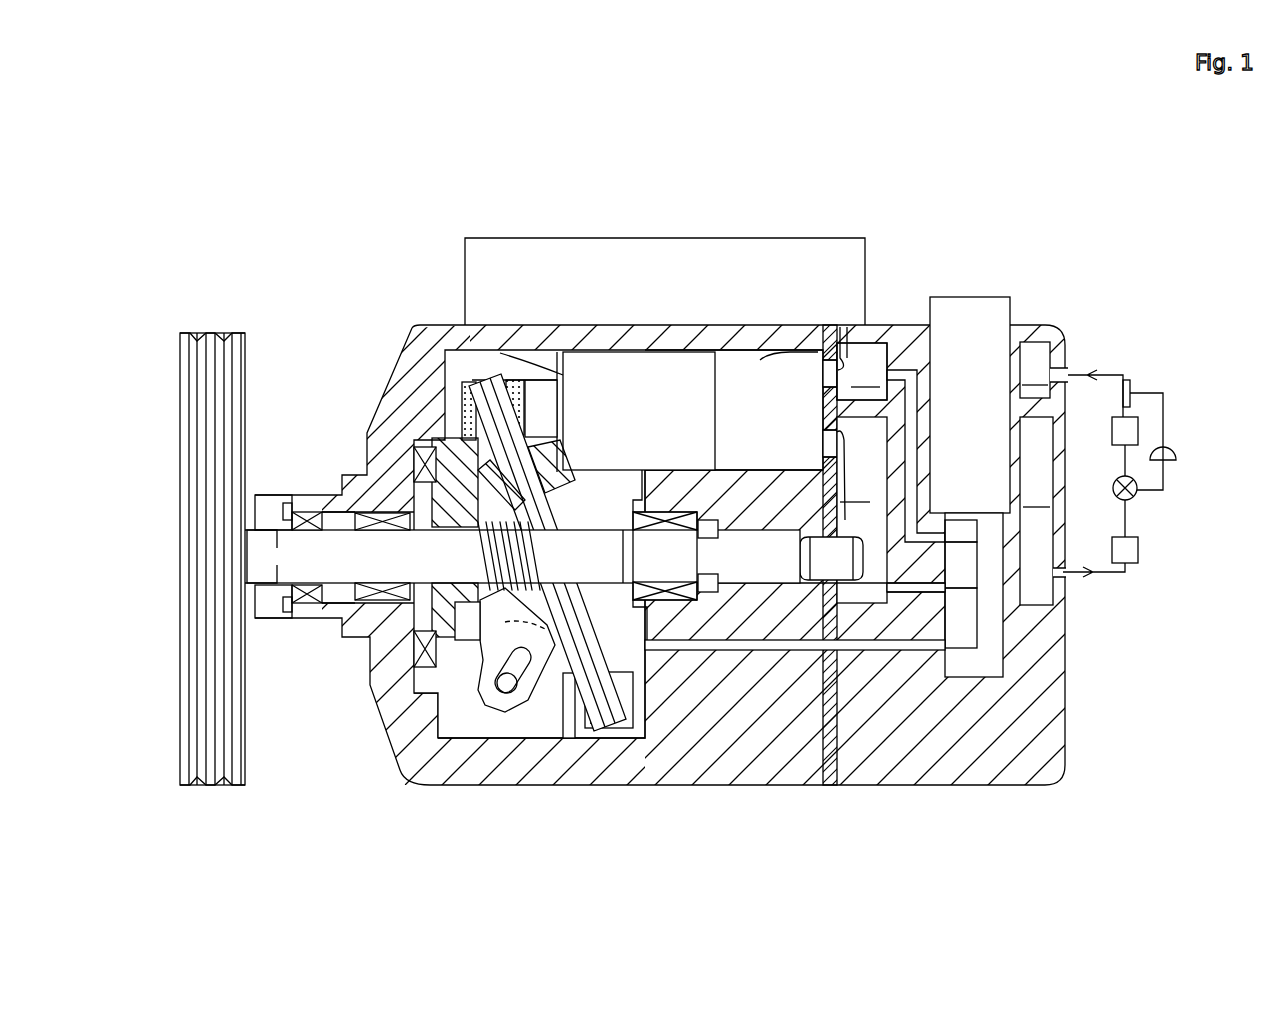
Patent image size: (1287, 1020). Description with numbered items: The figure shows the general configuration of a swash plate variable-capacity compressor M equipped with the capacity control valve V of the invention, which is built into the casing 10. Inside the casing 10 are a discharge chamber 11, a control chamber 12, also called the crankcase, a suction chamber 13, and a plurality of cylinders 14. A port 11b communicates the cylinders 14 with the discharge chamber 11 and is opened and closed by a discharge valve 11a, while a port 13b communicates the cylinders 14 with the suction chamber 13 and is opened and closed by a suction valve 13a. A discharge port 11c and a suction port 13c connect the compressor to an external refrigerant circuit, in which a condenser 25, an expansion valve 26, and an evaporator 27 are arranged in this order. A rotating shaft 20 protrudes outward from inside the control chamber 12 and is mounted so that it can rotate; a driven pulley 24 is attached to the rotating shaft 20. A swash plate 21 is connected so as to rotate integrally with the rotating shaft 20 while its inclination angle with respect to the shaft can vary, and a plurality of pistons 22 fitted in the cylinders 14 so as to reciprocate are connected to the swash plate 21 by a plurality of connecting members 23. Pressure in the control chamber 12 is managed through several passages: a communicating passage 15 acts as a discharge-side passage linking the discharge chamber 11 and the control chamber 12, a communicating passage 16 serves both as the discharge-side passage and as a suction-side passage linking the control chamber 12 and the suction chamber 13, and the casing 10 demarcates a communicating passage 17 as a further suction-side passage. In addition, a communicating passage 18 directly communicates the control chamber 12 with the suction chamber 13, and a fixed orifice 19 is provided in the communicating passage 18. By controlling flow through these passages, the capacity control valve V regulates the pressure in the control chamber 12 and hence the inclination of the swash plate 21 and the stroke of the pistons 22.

The casing 10 is at (690, 325).
The discharge chamber 11 is at (945, 473).
The discharge valve 11a is at (845, 437).
The port 11b is at (830, 433).
The discharge port 11c is at (1063, 574).
The control chamber 12 is at (552, 735).
The suction chamber 13 is at (862, 371).
The suction valve 13a is at (816, 382).
The port 13b is at (845, 352).
The suction port 13c is at (1063, 375).
The cylinders 14 is at (765, 362).
The communicating passage 15 is at (870, 567).
The communicating passage 16 is at (890, 650).
The communicating passage 17 is at (898, 365).
The communicating passage 18 is at (783, 238).
The fixed orifice 19 is at (866, 297).
The rotating shaft 20 is at (387, 550).
The swash plate 21 is at (483, 345).
The pistons 22 is at (640, 387).
The connecting members 23 is at (592, 717).
The driven pulley 24 is at (245, 335).
The condenser 25 is at (1138, 548).
The expansion valve 26 is at (1137, 497).
The evaporator 27 is at (1135, 430).
The swash plate variable-capacity compressor M is at (437, 322).
The capacity control valve V is at (968, 297).